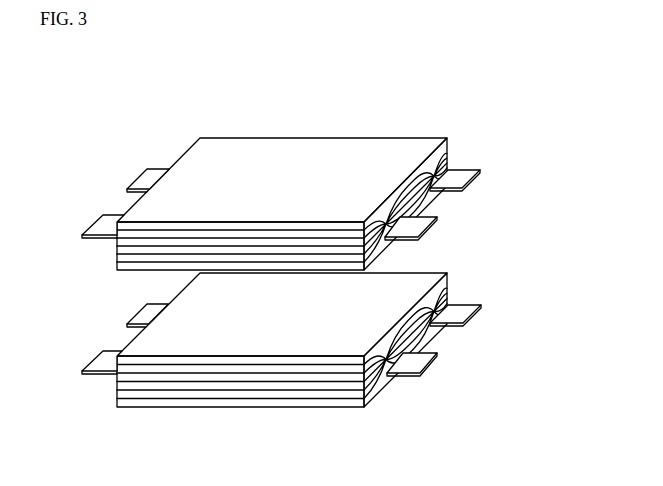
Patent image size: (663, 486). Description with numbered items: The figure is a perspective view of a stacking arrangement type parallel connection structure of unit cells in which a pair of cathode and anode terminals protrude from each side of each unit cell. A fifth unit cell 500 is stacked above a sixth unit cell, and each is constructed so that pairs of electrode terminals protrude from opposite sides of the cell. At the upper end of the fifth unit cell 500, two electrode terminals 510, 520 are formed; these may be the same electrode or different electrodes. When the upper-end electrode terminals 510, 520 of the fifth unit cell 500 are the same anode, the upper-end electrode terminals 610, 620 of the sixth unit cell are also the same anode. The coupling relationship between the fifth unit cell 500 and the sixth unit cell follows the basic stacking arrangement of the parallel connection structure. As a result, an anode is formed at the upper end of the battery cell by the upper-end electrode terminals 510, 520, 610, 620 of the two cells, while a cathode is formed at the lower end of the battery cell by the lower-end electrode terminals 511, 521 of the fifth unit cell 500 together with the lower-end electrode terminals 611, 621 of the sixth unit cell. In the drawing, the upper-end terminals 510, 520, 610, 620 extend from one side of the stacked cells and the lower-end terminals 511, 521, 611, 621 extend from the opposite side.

The fifth unit cell 500 is at (305, 138).
The upper-end electrode terminal 510 is at (103, 220).
The upper-end electrode terminal 520 is at (147, 178).
The lower-end electrode terminal 511 is at (399, 240).
The lower-end electrode terminal 521 is at (457, 172).
The upper-end electrode terminal 610 is at (98, 375).
The upper-end electrode terminal 620 is at (133, 320).
The lower-end electrode terminal 611 is at (430, 358).
The lower-end electrode terminal 621 is at (468, 310).